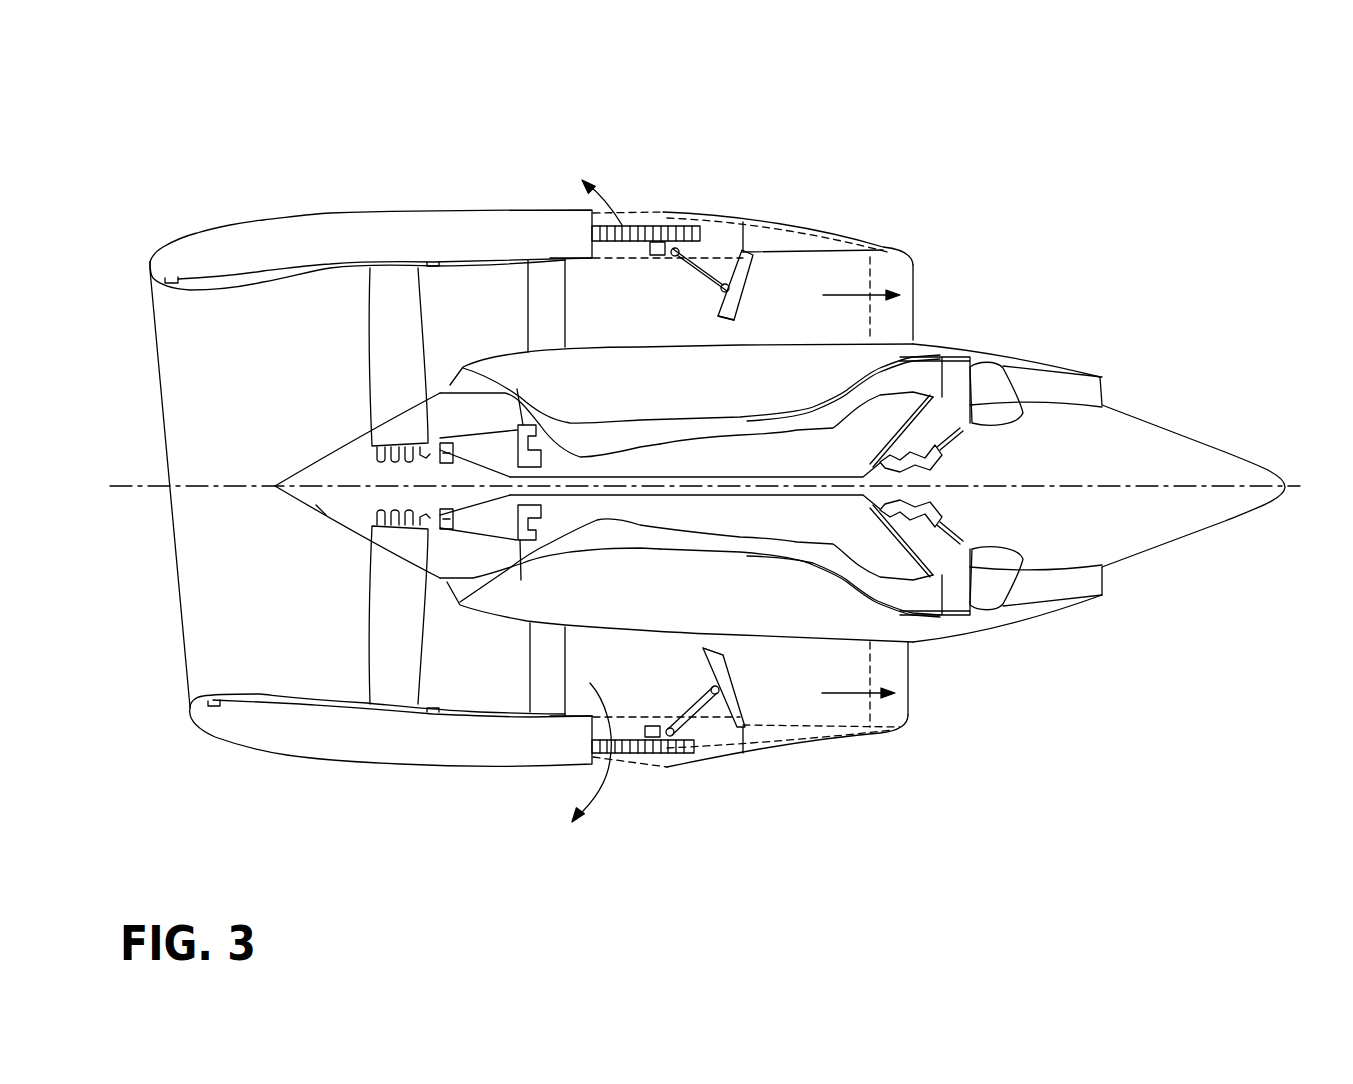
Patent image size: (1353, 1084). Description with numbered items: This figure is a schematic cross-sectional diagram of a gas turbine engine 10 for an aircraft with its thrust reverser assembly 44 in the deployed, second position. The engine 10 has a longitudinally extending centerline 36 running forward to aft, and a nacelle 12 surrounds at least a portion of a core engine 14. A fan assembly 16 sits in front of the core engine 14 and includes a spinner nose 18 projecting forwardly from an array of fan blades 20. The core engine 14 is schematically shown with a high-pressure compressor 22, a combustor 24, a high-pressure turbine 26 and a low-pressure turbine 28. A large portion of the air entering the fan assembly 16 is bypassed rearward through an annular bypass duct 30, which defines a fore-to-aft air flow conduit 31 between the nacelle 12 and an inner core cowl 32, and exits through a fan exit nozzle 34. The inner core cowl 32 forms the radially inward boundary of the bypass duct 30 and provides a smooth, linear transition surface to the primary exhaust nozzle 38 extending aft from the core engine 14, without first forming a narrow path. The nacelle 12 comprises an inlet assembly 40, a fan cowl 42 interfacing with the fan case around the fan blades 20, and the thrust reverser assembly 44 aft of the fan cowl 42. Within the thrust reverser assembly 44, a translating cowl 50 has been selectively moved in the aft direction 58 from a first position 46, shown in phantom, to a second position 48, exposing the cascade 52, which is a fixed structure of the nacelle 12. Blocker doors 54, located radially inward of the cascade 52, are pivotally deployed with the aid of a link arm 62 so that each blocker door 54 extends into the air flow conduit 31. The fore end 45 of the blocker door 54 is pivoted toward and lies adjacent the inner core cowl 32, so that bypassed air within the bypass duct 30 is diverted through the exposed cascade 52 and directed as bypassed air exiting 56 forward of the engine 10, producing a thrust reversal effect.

The gas turbine engine 10 is at (938, 138).
The nacelle 12 is at (378, 155).
The core engine 14 is at (950, 630).
The fan assembly 16 is at (270, 632).
The spinner nose 18 is at (318, 512).
The fan blades 20 is at (385, 329).
The high-pressure compressor 22 is at (588, 440).
The combustor 24 is at (767, 433).
The high-pressure turbine 26 is at (826, 558).
The low-pressure turbine 28 is at (910, 376).
The bypass duct 30 is at (476, 326).
The fore-to-aft air flow conduit 31 is at (847, 662).
The inner core cowl 32 is at (760, 340).
The fan exit nozzle 34 is at (905, 268).
The centerline 36 is at (143, 487).
The primary exhaust nozzle 38 is at (1045, 355).
The inlet assembly 40 is at (255, 218).
The fan cowl 42 is at (494, 203).
The thrust reverser assembly 44 is at (620, 186).
The fore end 45 is at (727, 323).
The first position 46 is at (890, 243).
The second position 48 is at (914, 303).
The translating cowl 50 is at (777, 232).
The cascade 52 is at (682, 230).
The blocker door 54 is at (750, 250).
The bypassed air exiting 56 is at (620, 215).
The aft direction 58 is at (862, 297).
The link arm 62 is at (697, 277).